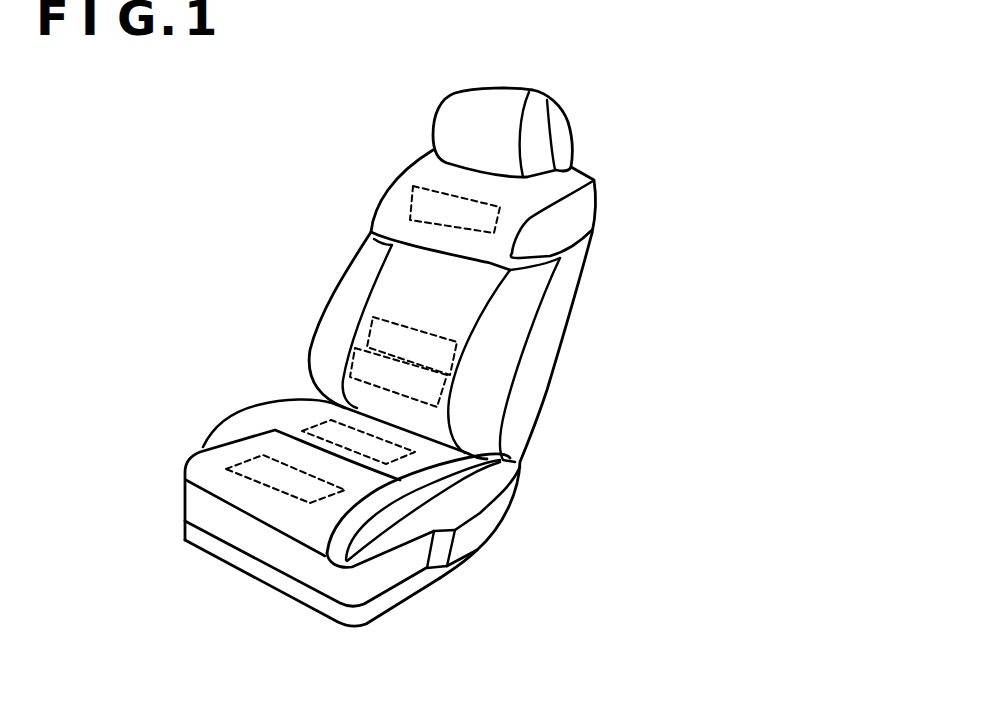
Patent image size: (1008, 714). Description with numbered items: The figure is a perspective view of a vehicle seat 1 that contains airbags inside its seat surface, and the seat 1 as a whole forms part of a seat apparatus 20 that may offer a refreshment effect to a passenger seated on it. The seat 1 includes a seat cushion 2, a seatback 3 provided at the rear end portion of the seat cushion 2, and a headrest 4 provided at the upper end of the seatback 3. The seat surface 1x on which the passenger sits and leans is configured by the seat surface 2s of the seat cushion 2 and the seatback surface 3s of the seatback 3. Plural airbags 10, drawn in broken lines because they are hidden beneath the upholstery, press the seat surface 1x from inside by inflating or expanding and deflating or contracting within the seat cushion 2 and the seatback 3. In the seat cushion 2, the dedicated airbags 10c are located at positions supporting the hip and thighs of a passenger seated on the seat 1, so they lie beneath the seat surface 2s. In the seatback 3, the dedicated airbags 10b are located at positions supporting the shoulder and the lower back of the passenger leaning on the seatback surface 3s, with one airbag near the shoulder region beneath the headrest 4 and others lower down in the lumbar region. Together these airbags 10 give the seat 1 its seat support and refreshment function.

The seat 1 is at (163, 126).
The seat apparatus 20 is at (373, 357).
The seat cushion 2 is at (188, 462).
The seat surface 2s is at (262, 447).
The seatback 3 is at (592, 233).
The seatback surface 3s is at (403, 275).
The headrest 4 is at (572, 139).
The airbags 10 is at (380, 305).
The airbags 10b is at (412, 183).
The airbags 10c is at (303, 426).
The seat surface 1x is at (270, 336).